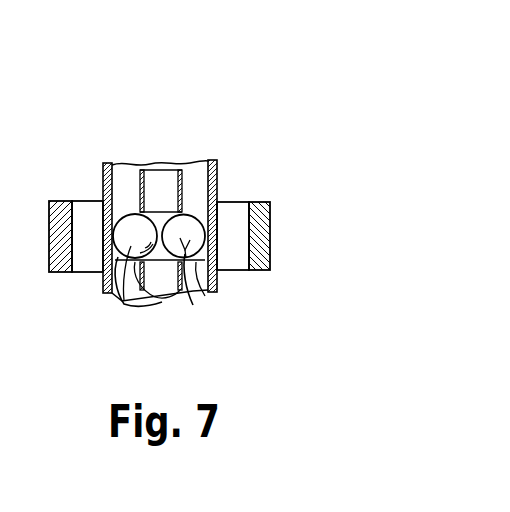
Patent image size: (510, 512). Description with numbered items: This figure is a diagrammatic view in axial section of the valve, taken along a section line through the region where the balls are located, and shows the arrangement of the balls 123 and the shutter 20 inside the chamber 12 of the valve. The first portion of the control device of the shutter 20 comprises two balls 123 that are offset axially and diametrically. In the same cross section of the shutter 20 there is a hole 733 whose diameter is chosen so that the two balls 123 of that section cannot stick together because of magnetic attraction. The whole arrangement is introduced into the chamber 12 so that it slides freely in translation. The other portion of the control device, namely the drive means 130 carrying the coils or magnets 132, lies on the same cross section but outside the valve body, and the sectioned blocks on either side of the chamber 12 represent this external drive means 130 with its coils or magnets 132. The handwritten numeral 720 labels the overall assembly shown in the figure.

The chamber 12 is at (121, 178).
The shutter 20 is at (160, 186).
The balls 123 is at (128, 306).
The hole 733 is at (163, 302).
The drive means 130 is at (272, 270).
The coils or magnets 132 is at (231, 210).
The assembly 720 is at (216, 173).